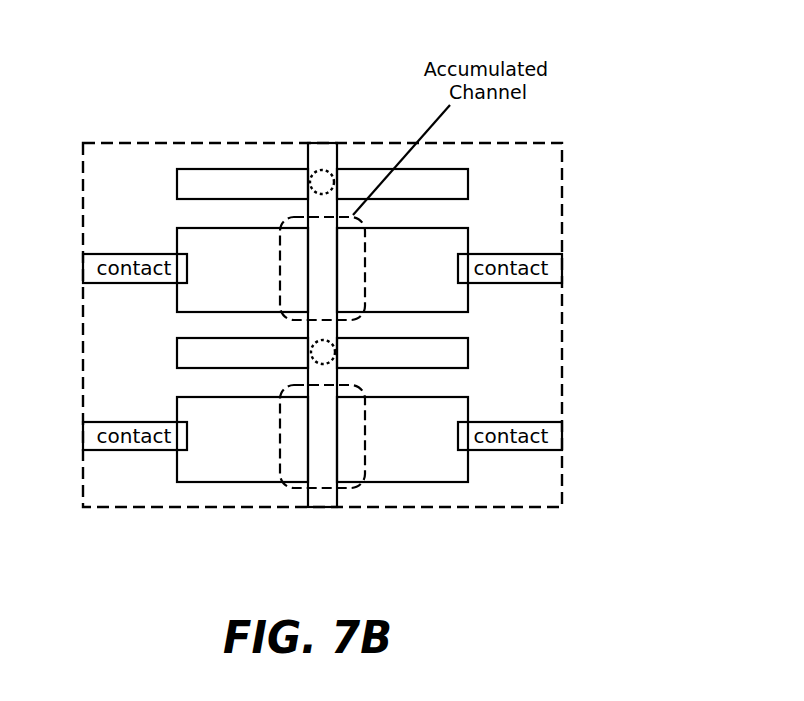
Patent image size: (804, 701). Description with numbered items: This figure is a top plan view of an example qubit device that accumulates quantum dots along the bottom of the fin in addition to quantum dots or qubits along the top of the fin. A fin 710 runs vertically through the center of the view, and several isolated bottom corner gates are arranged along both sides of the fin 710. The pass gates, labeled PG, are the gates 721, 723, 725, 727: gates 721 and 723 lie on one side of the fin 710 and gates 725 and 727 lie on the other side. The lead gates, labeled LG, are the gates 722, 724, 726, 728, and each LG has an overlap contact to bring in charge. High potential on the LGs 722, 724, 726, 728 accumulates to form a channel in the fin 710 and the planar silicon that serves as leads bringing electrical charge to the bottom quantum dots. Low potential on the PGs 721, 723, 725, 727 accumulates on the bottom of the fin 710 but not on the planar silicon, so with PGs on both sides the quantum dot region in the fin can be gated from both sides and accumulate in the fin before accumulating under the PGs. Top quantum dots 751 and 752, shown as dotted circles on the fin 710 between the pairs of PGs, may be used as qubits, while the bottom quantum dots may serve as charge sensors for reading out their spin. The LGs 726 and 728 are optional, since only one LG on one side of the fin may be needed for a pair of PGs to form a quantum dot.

The fin 710 is at (321, 498).
The bottom corner gate (PG) 721 is at (187, 188).
The bottom corner gate (LG) 722 is at (187, 292).
The bottom corner gate (PG) 723 is at (197, 347).
The bottom corner gate (LG) 724 is at (197, 468).
The bottom corner gate (PG) 725 is at (448, 188).
The bottom corner gate (LG) 726 is at (448, 245).
The bottom corner gate (PG) 727 is at (448, 348).
The bottom corner gate (LG) 728 is at (457, 412).
The top quantum dot 751 is at (328, 172).
The top quantum dot 752 is at (318, 363).